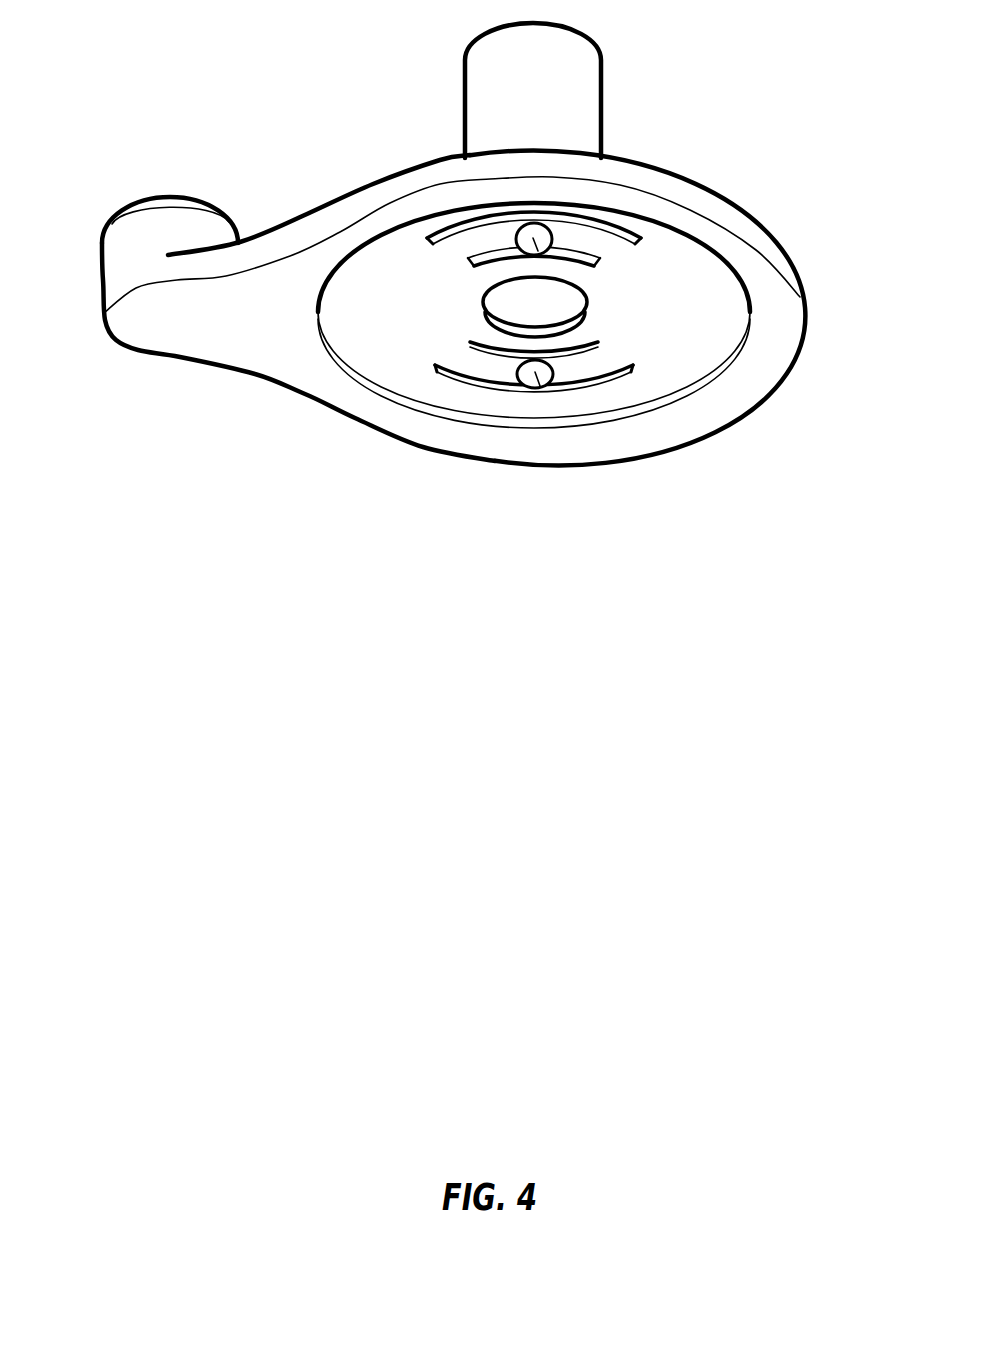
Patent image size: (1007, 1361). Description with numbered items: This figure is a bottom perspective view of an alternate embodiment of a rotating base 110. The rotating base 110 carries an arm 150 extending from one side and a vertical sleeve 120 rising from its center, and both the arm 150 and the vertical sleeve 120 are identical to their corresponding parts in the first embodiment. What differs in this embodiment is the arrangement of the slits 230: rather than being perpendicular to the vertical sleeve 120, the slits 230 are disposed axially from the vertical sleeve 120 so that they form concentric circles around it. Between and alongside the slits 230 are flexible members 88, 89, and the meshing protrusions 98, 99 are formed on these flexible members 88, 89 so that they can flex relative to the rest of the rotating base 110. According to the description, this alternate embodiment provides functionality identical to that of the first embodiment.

The rotating base 110 is at (666, 452).
The vertical sleeve 120 is at (583, 70).
The arm 150 is at (166, 337).
The slits 230 is at (465, 259).
The flexible member 88 is at (583, 240).
The flexible member 89 is at (580, 367).
The meshing protrusion 98 is at (608, 264).
The meshing protrusion 99 is at (546, 388).